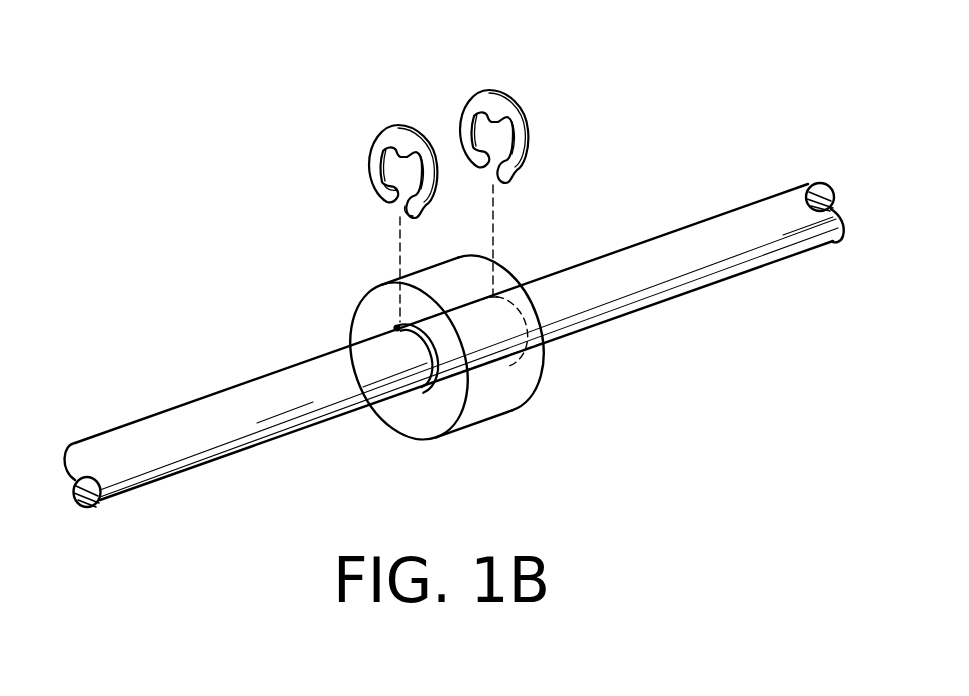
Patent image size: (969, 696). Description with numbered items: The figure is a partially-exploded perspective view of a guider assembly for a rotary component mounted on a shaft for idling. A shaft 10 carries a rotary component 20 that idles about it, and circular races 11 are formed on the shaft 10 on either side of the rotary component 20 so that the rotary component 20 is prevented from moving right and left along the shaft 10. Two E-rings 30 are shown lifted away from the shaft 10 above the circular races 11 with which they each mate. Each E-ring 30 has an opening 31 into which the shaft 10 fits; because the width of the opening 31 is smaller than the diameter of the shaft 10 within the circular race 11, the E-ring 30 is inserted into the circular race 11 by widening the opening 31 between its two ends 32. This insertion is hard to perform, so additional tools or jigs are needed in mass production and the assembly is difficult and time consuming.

The shaft 10 is at (203, 423).
The circular race 11 is at (397, 328).
The rotary component 20 is at (497, 380).
The E-ring 30 is at (398, 128).
The opening 31 is at (397, 173).
The ends of E-ring 32 is at (381, 190).